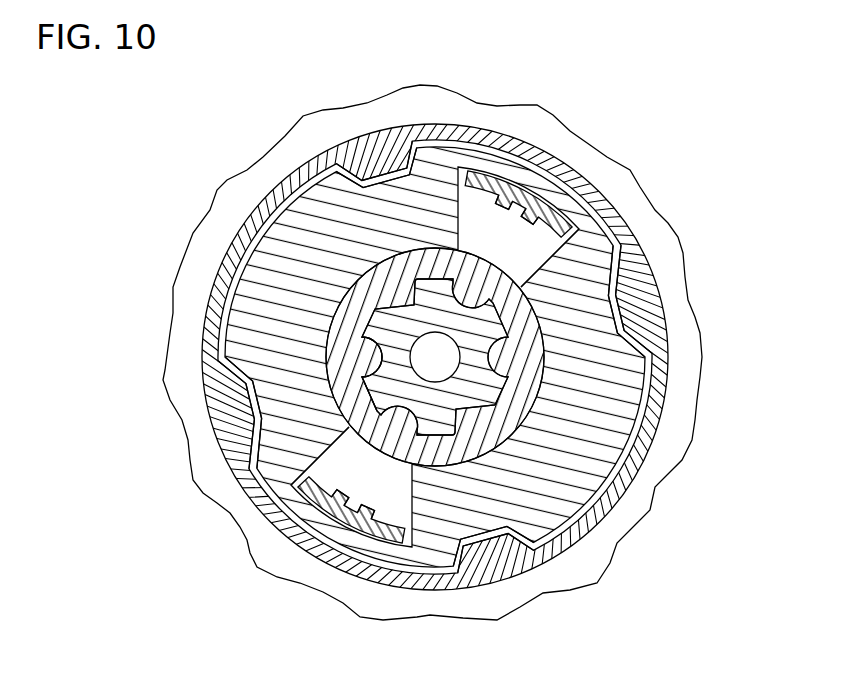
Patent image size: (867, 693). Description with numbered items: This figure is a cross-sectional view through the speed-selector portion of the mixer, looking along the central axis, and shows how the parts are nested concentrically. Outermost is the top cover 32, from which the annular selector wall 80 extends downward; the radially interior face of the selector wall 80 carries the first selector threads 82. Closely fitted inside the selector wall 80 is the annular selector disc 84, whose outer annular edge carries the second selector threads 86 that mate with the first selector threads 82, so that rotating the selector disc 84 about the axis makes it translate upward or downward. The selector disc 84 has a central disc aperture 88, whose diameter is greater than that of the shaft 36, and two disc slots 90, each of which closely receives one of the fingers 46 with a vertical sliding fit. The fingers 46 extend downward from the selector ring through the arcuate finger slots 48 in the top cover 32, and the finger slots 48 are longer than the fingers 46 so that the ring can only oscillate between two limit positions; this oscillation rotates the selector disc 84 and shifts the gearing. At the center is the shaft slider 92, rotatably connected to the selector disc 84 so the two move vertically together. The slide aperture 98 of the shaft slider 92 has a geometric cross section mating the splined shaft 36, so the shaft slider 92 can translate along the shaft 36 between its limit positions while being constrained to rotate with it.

The top cover 32 is at (633, 522).
The shaft 36 is at (487, 385).
The fingers 46 is at (523, 190).
The finger slots 48 is at (458, 216).
The selector wall 80 is at (627, 224).
The first selector threads 82 is at (393, 167).
The selector disc 84 is at (618, 382).
The second selector threads 86 is at (388, 168).
The central disc aperture 88 is at (340, 293).
The disc slots 90 is at (547, 260).
The shaft slider 92 is at (343, 360).
The slide aperture 98 is at (367, 397).